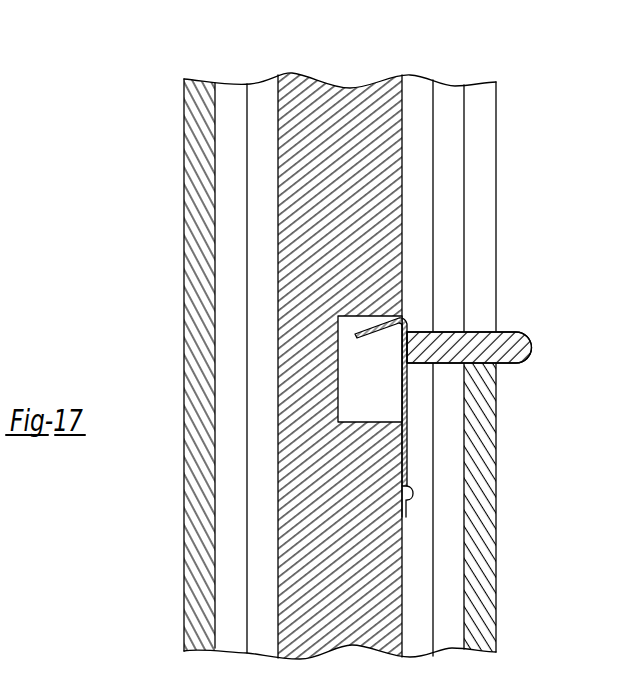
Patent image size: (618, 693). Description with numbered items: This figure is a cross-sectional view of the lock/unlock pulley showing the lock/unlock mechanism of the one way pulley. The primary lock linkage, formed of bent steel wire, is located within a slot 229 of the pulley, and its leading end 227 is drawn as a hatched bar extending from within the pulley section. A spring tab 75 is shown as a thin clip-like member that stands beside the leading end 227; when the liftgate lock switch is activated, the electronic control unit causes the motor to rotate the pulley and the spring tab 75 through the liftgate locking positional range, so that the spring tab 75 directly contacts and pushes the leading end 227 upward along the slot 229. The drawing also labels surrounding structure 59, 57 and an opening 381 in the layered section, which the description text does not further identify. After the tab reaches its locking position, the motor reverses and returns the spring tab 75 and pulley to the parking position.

The panel 59 is at (328, 127).
The aperture 381 is at (340, 387).
The slot 229 is at (476, 188).
The trim member 57 is at (478, 452).
The leading end 227 is at (508, 342).
The spring tab 75 is at (407, 323).